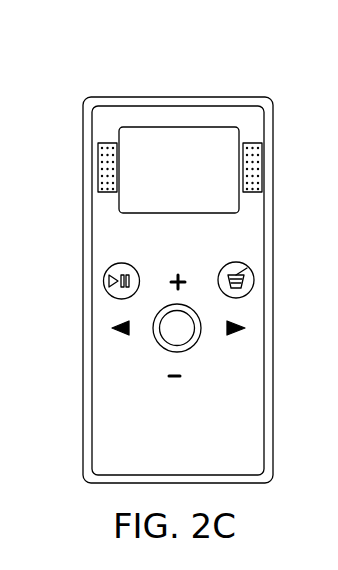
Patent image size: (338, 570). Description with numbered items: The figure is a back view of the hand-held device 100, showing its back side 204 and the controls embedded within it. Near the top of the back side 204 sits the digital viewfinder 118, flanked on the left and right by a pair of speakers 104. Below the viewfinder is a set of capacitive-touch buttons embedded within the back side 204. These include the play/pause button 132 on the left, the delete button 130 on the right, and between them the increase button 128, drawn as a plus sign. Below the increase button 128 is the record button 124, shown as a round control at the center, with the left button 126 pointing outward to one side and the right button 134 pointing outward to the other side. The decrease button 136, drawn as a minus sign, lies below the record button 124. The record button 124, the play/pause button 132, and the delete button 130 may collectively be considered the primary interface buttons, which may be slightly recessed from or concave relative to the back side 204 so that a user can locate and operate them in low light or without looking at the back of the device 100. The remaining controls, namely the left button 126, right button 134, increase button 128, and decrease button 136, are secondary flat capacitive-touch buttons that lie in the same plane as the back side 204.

The portable media device 100 is at (178, 96).
The back side 204 is at (216, 117).
The digital viewfinder 118 is at (160, 150).
The speakers 104 is at (98, 150).
The play/pause button 132 is at (103, 282).
The delete button 130 is at (255, 280).
The increase button 128 is at (186, 278).
The record button 124 is at (183, 330).
The left button 126 is at (112, 328).
The right button 134 is at (247, 328).
The decrease button 136 is at (168, 376).